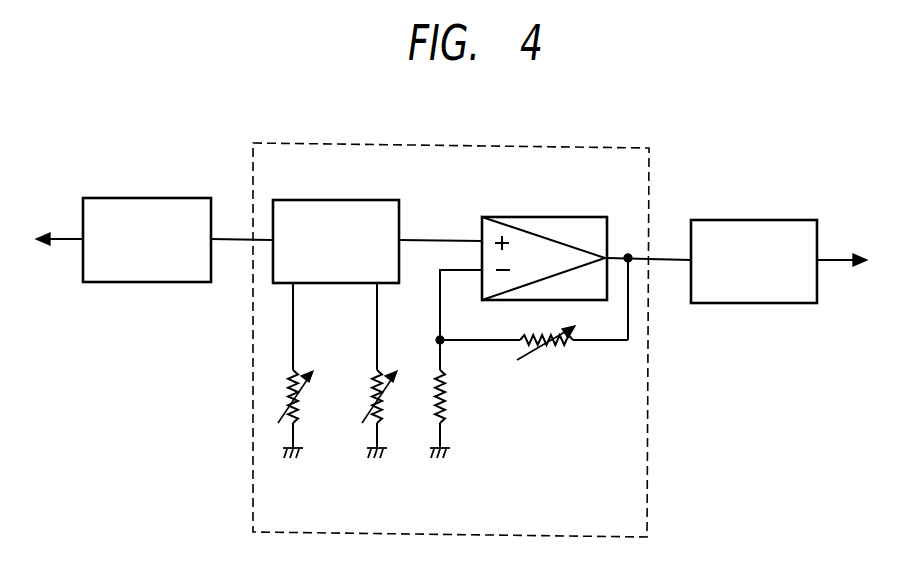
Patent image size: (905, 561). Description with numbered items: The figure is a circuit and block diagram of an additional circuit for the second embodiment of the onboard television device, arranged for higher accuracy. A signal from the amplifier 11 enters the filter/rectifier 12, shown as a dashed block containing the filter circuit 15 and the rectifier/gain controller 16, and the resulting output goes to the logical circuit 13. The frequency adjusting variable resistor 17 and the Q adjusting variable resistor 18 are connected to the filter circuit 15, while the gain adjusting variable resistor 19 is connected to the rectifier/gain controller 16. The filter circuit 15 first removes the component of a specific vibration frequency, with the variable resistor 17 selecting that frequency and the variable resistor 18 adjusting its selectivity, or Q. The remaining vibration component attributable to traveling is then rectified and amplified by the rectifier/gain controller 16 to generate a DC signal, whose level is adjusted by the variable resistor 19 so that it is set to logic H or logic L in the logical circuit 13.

The amplifier 11 is at (178, 197).
The filter/rectifier 12 is at (577, 145).
The logical circuit 13 is at (782, 219).
The filter circuit 15 is at (358, 199).
The rectifier/gain controller 16 is at (567, 215).
The variable resistor for adjusting frequency 17 is at (303, 403).
The variable resistor for adjusting Q 18 is at (385, 408).
The variable resistor for adjusting gain 19 is at (548, 348).